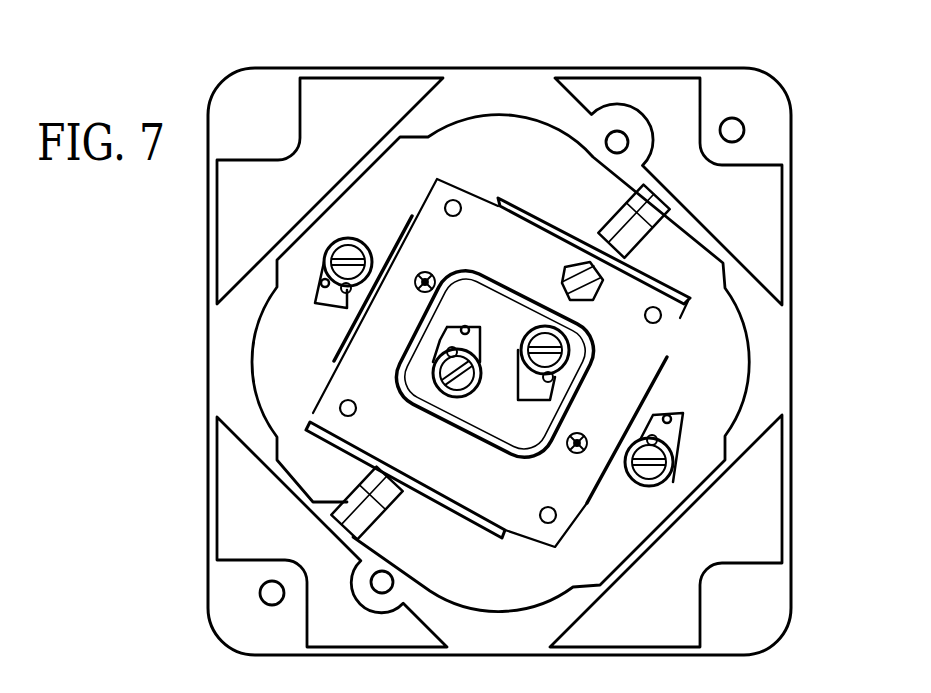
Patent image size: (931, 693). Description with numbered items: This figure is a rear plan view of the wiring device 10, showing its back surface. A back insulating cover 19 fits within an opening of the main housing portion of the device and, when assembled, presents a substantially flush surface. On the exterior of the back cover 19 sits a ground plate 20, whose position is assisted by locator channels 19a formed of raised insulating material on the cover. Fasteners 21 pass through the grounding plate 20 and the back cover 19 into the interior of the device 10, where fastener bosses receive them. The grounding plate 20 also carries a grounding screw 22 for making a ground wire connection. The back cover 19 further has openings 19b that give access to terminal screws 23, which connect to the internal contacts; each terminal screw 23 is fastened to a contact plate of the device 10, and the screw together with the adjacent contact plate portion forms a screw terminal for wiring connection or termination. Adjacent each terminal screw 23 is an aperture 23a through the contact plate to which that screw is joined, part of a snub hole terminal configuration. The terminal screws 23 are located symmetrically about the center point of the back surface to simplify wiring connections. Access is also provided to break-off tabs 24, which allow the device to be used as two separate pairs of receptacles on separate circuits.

The wiring device 10 is at (208, 358).
The back insulating cover 19 is at (514, 126).
The locator channels 19a is at (498, 528).
The openings 19b is at (318, 270).
The ground plate 20 is at (568, 502).
The fasteners 21 is at (420, 274).
The grounding screw 22 is at (575, 262).
The terminal screws 23 is at (346, 250).
The aperture 23a is at (348, 292).
The break-off tabs 24 is at (638, 230).